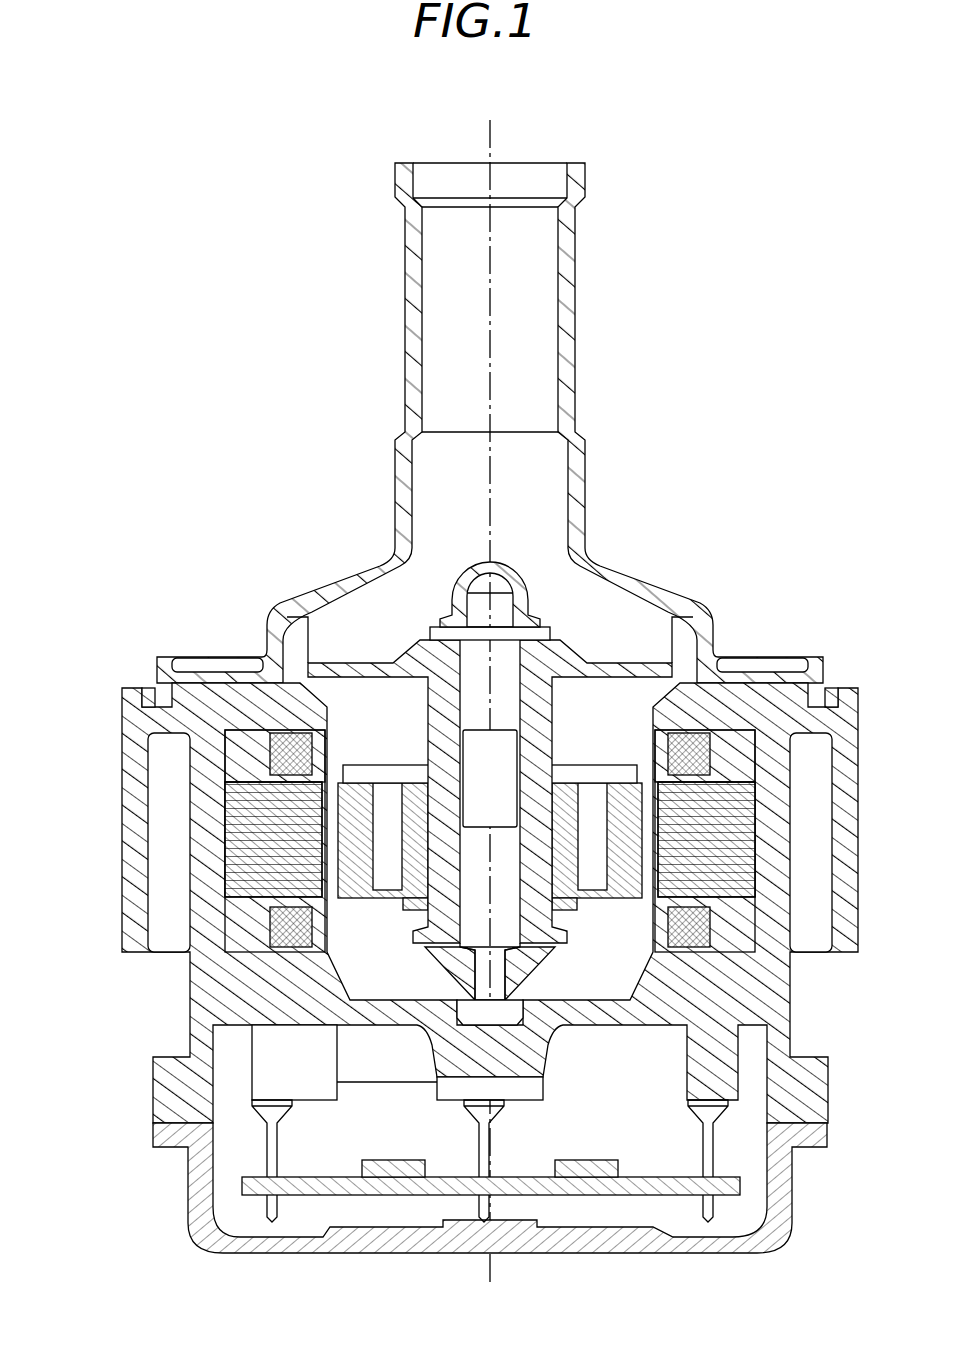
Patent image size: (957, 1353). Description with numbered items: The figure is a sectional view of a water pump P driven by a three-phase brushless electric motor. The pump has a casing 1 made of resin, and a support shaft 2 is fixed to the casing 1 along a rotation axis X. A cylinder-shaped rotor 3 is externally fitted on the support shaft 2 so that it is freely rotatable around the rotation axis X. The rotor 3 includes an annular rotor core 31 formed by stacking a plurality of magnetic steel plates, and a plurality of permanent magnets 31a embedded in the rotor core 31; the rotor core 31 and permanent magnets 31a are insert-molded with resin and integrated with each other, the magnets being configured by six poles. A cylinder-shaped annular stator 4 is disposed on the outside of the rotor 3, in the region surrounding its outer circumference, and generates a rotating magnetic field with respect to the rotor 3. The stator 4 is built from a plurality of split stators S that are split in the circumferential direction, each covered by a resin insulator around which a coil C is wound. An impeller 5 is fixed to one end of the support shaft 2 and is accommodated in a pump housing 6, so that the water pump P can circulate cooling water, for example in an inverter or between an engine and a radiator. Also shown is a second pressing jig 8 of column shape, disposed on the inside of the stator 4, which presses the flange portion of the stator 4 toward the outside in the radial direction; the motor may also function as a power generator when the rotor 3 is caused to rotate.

The casing 1 is at (122, 774).
The support shaft 2 is at (462, 673).
The rotor 3 is at (495, 850).
The stator 4 is at (494, 852).
The impeller 5 is at (383, 608).
The pump housing 6 is at (578, 348).
The second pressing jig 8 is at (310, 736).
The rotor core 31 is at (645, 800).
The permanent magnet 31a is at (599, 768).
The coil C is at (313, 757).
The split stator S is at (222, 847).
The water pump P is at (739, 259).
The rotation axis X is at (490, 688).